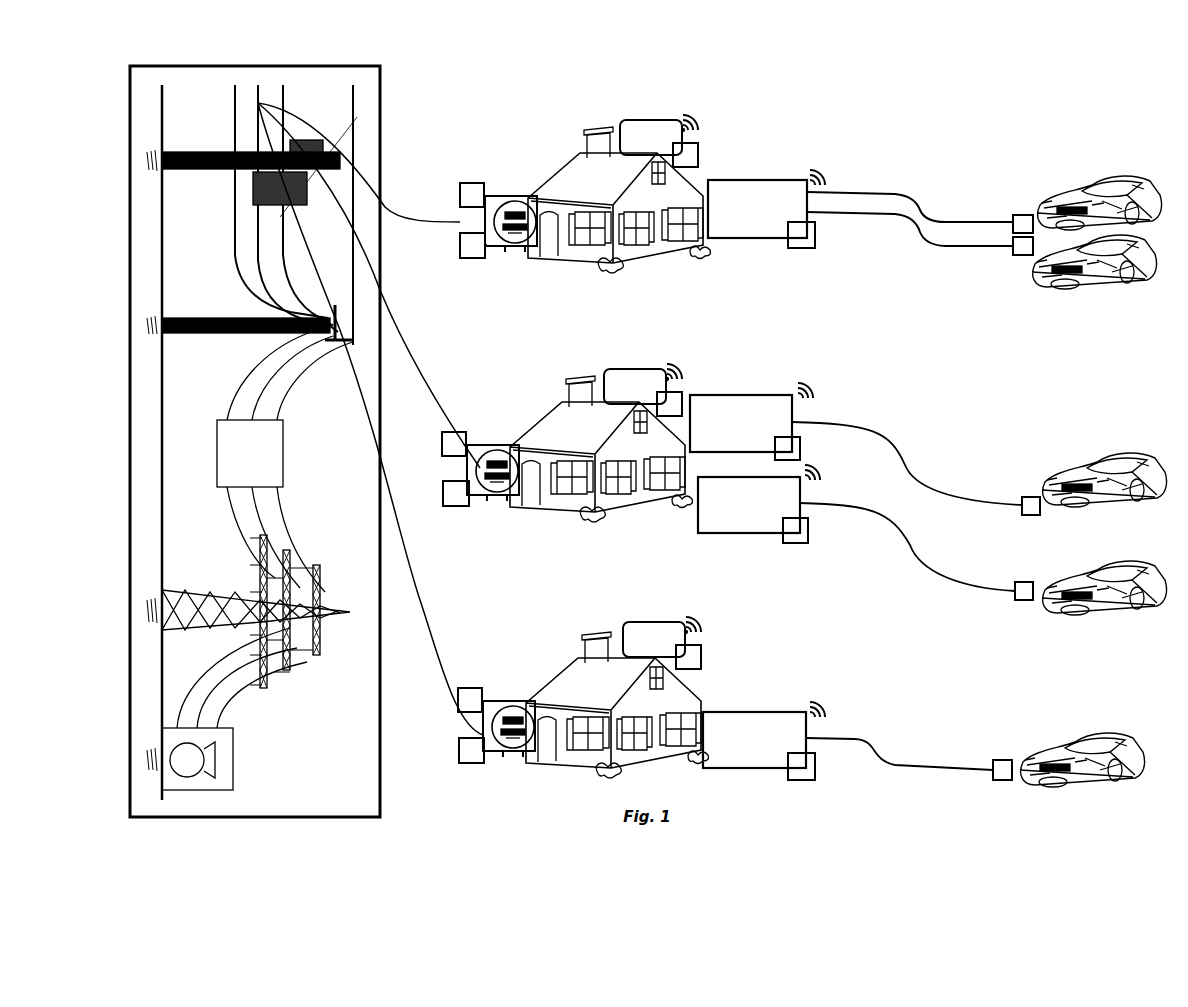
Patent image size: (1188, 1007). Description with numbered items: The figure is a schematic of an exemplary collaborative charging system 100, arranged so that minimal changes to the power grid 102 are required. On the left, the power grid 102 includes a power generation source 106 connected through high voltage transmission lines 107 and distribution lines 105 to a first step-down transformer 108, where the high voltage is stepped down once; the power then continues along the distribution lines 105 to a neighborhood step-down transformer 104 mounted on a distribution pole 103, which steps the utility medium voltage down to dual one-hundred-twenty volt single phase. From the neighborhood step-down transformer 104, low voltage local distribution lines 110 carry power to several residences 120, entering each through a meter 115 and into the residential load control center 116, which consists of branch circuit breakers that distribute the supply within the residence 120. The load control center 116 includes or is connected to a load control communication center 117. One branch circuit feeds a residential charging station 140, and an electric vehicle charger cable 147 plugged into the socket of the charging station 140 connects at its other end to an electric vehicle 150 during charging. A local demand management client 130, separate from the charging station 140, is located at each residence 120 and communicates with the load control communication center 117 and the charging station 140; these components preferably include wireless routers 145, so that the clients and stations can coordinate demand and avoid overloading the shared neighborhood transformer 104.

The collaborative charging system 100 is at (975, 77).
The power grid 102 is at (255, 431).
The distribution pole 103 is at (251, 150).
The neighborhood step-down transformer 104 is at (294, 178).
The distribution lines 105 is at (257, 315).
The power generation source 106 is at (213, 759).
The high voltage transmission lines 107 is at (256, 607).
The first step-down transformer 108 is at (266, 453).
The local distribution lines 110 is at (370, 419).
The meter 115 is at (517, 247).
The load control center 116 is at (490, 189).
The load control communication center 117 is at (466, 182).
The residence 120 is at (610, 463).
The local demand management client 130 is at (652, 377).
The charging station 140 is at (757, 462).
The wireless router 145 is at (460, 260).
The electric vehicle charger cable 147 is at (916, 496).
The electric vehicle 150 is at (1093, 472).